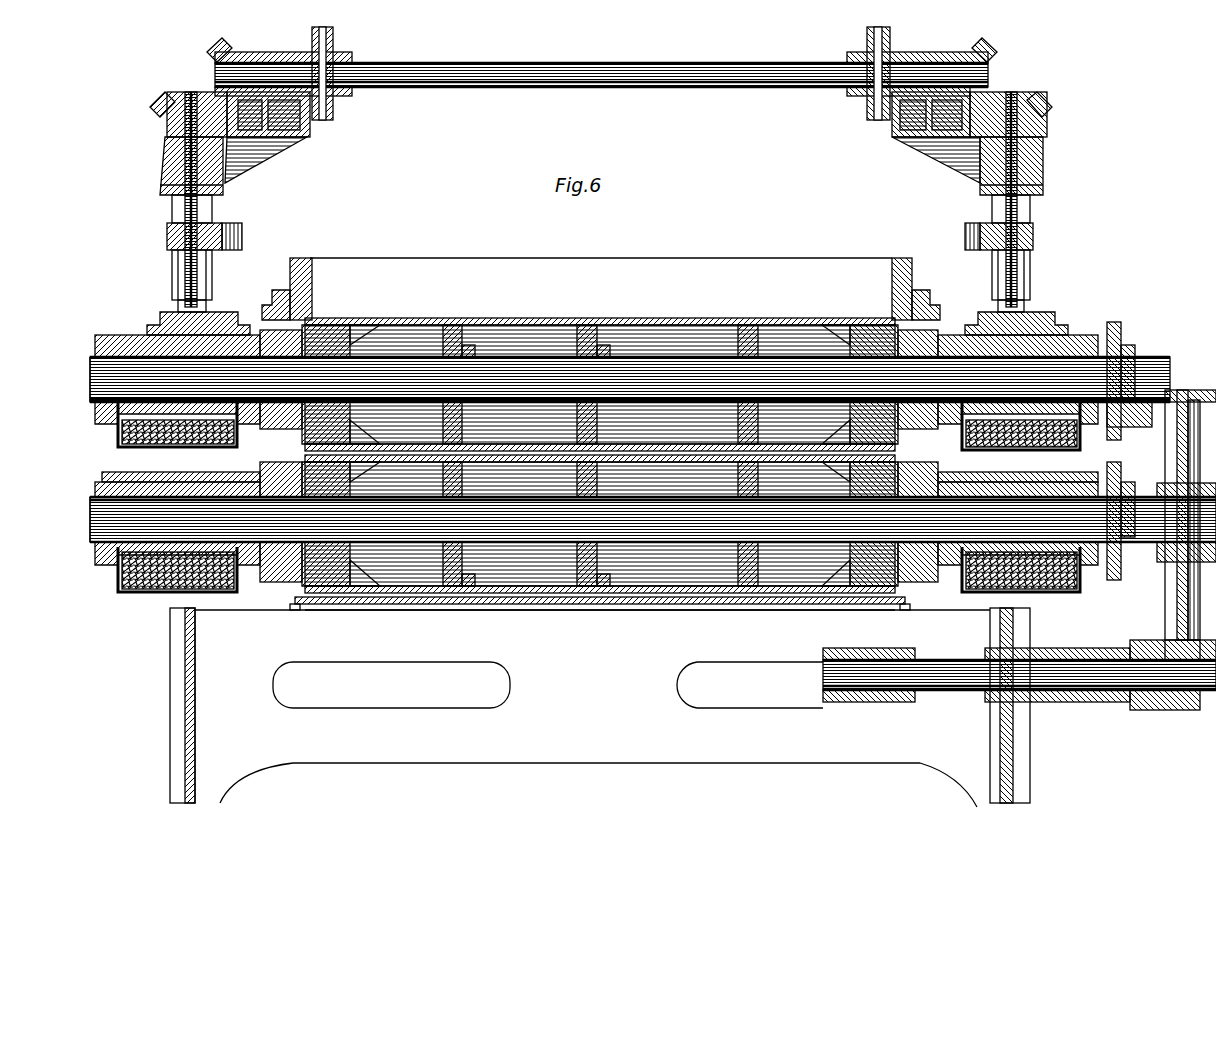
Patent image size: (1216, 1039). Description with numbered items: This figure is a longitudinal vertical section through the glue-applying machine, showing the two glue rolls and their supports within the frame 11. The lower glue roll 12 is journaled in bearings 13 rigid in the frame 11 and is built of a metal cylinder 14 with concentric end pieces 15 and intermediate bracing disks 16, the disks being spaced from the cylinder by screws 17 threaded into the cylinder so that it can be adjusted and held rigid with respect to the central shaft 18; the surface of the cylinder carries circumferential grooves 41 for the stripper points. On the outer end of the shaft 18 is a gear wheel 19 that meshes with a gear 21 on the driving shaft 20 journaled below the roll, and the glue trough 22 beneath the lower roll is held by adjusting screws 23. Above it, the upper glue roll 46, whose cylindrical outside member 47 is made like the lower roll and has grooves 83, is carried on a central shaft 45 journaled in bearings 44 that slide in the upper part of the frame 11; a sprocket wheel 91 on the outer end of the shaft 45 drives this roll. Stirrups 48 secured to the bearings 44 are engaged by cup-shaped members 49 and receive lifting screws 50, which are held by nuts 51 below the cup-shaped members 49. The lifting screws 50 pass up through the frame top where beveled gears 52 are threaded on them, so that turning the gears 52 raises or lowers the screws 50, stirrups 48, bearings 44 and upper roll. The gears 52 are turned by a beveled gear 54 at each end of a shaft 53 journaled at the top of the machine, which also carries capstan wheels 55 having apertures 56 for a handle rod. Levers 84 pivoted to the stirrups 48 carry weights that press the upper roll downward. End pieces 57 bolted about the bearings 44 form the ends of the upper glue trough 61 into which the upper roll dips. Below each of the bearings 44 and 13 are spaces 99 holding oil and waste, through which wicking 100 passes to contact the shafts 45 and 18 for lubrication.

The frame 11 is at (178, 210).
The lower glue roll 12 is at (400, 640).
The bearings 13 is at (118, 472).
The metal cylinder 14 is at (682, 604).
The concentric end pieces 15 is at (355, 595).
The intermediate bracing disks 16 is at (580, 325).
The screws 17 is at (632, 322).
The central shaft 18 is at (668, 515).
The gear wheel 19 is at (1177, 588).
The driving shaft 20 is at (972, 700).
The gear 21 is at (1175, 710).
The glue trough 22 is at (448, 640).
The adjusting screws 23 is at (300, 610).
The circumferential grooves 41 is at (530, 604).
The bearings 44 is at (137, 333).
The central shaft 45 is at (660, 378).
The upper glue roll 46 is at (545, 318).
The cylindrical outside member 47 is at (460, 318).
The stirrups 48 is at (207, 232).
The cup-shaped members 49 is at (170, 268).
The lifting screws 50 is at (185, 232).
The nuts 51 is at (178, 306).
The beveled gears 52 is at (163, 100).
The shaft 53 is at (770, 82).
The beveled gear 54 is at (216, 46).
The capstan wheels 55 is at (340, 52).
The apertures 56 is at (878, 118).
The end pieces 57 is at (290, 282).
The glue trough 61 is at (782, 258).
The grooves 83 is at (525, 318).
The levers 84 is at (242, 230).
The sprocket wheel 91 is at (1122, 325).
The spaces 99 is at (1045, 598).
The wicking 100 is at (120, 428).